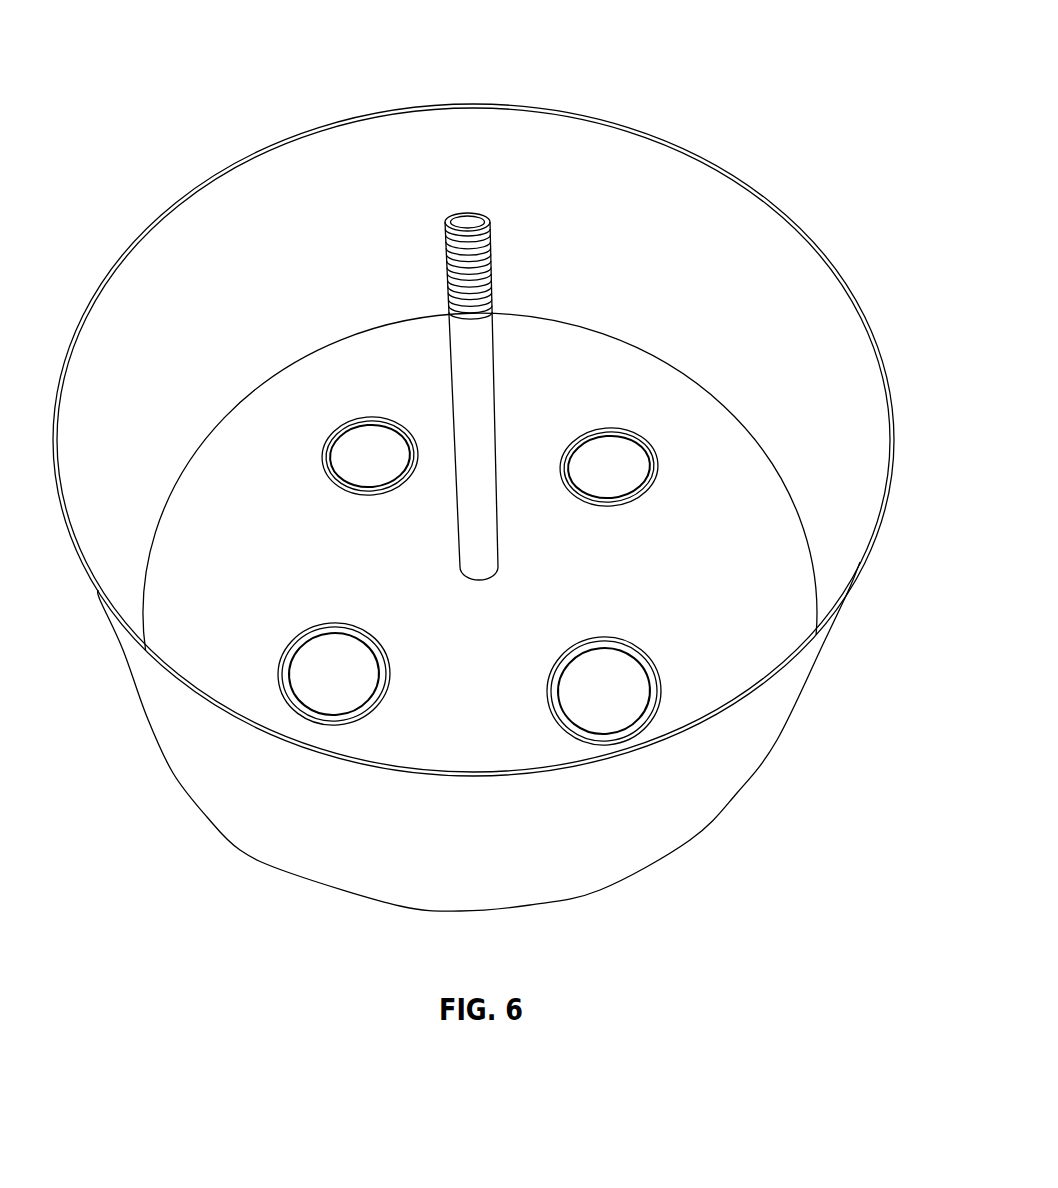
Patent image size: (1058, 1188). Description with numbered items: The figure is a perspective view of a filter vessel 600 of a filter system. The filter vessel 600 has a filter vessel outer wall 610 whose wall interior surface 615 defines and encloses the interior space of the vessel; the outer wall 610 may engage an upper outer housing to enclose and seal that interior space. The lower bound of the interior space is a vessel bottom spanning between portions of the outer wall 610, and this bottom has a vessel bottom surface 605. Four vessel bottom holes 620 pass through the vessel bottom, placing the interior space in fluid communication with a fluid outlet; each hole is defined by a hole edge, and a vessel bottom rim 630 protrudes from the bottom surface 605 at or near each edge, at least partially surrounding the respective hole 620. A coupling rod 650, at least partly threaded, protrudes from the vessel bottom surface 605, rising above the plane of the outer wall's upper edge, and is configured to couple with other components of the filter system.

The filter vessel 600 is at (738, 81).
The vessel bottom surface 605 is at (254, 414).
The filter vessel outer wall 610 is at (779, 206).
The wall interior surface 615 is at (336, 326).
The vessel bottom hole 620 is at (351, 467).
The vessel bottom rim 630 is at (328, 472).
The coupling rod 650 is at (468, 222).